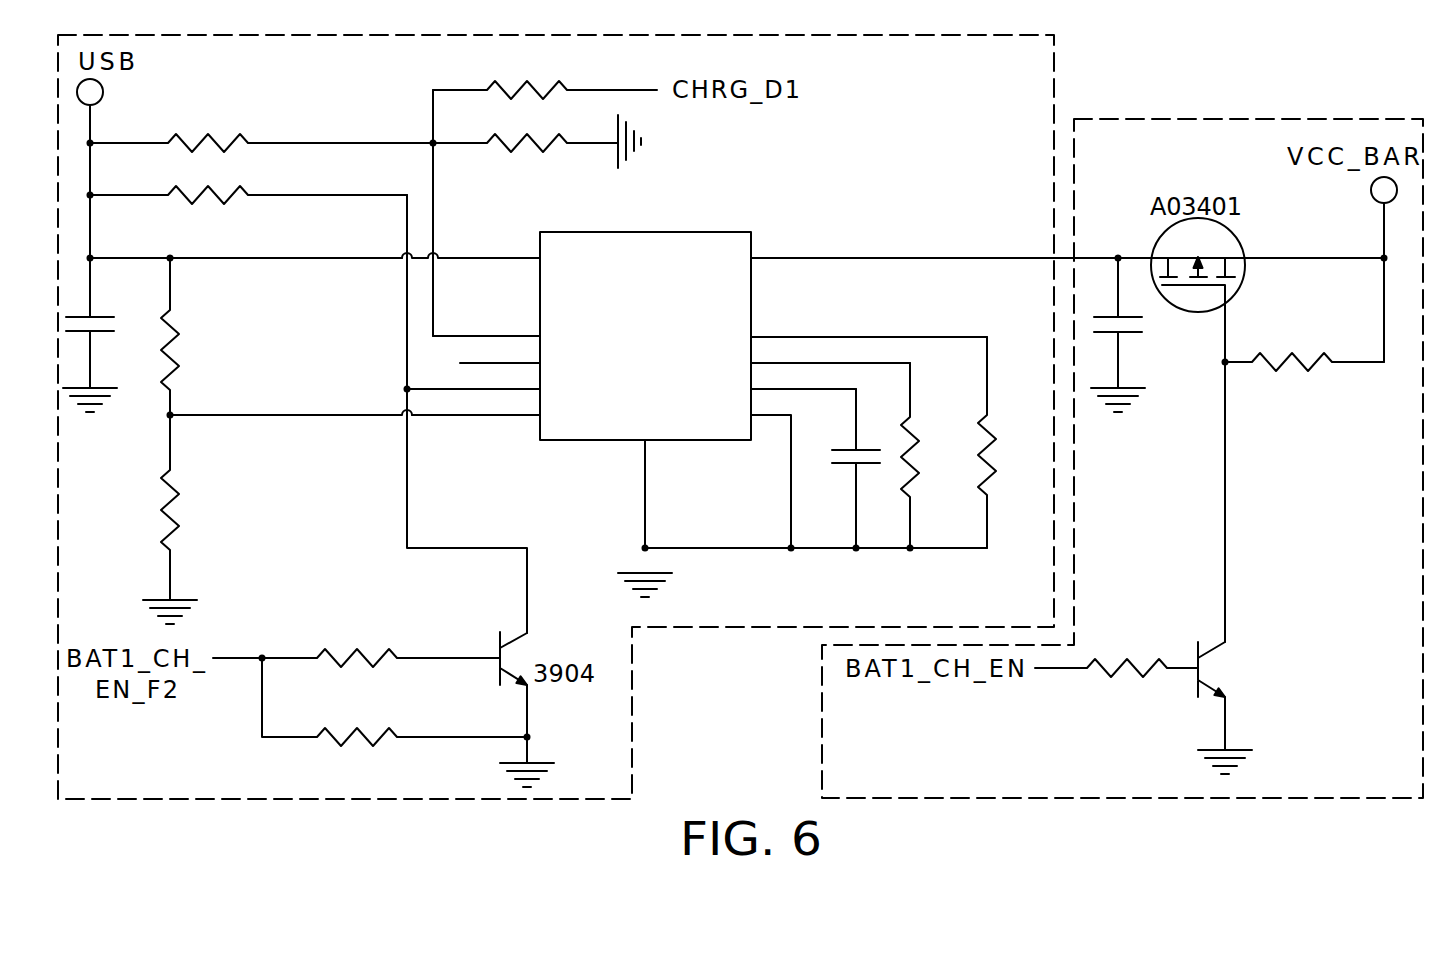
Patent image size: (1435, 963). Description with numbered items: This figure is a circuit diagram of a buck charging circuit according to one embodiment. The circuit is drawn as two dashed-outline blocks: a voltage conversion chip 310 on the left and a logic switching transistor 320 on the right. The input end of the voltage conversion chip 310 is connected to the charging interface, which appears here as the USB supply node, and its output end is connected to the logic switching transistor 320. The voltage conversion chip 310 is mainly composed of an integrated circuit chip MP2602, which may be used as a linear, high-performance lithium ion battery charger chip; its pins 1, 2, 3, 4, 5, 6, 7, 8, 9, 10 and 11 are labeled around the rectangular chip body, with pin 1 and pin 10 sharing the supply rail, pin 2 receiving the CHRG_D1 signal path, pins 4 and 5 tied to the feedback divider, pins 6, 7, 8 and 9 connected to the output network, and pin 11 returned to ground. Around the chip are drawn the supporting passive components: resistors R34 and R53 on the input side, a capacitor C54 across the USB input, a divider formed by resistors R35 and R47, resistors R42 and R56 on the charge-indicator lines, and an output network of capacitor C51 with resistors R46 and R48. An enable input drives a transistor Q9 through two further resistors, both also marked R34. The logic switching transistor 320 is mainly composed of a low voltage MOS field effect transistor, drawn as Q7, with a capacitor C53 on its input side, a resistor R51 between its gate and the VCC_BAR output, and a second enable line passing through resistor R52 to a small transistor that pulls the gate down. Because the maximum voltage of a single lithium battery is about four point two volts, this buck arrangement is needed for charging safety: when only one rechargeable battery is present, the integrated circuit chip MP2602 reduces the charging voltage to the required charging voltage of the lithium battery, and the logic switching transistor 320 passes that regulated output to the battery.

The voltage conversion chip 310 is at (1054, 60).
The logic switching transistor 320 is at (1255, 119).
The integrated circuit chip MP2602 is at (645, 336).
The resistor R34 is at (308, 456).
The resistor R53 is at (248, 210).
The capacitor C54 is at (104, 350).
The resistor R35 is at (196, 336).
The resistor R47 is at (187, 519).
The resistor R42 is at (545, 104).
The resistor R56 is at (525, 157).
The capacitor C51 is at (841, 468).
The resistor R46 is at (933, 455).
The resistor R48 is at (1011, 442).
The capacitor C53 is at (1140, 335).
The resistor R51 is at (1304, 377).
The MOSFET Q7 is at (1198, 401).
The resistor R52 is at (1116, 684).
The transistor Q9 is at (537, 709).
The pin 1 is at (658, 451).
The pin 2 is at (851, 482).
The pin 3 is at (844, 434).
The pin 4 is at (473, 377).
The pin 5 is at (476, 404).
The pin 6 is at (771, 470).
The pin 7 is at (803, 377).
The pin 8 is at (830, 351).
The pin 9 is at (869, 325).
The pin 10 is at (902, 247).
The pin 11 is at (660, 494).